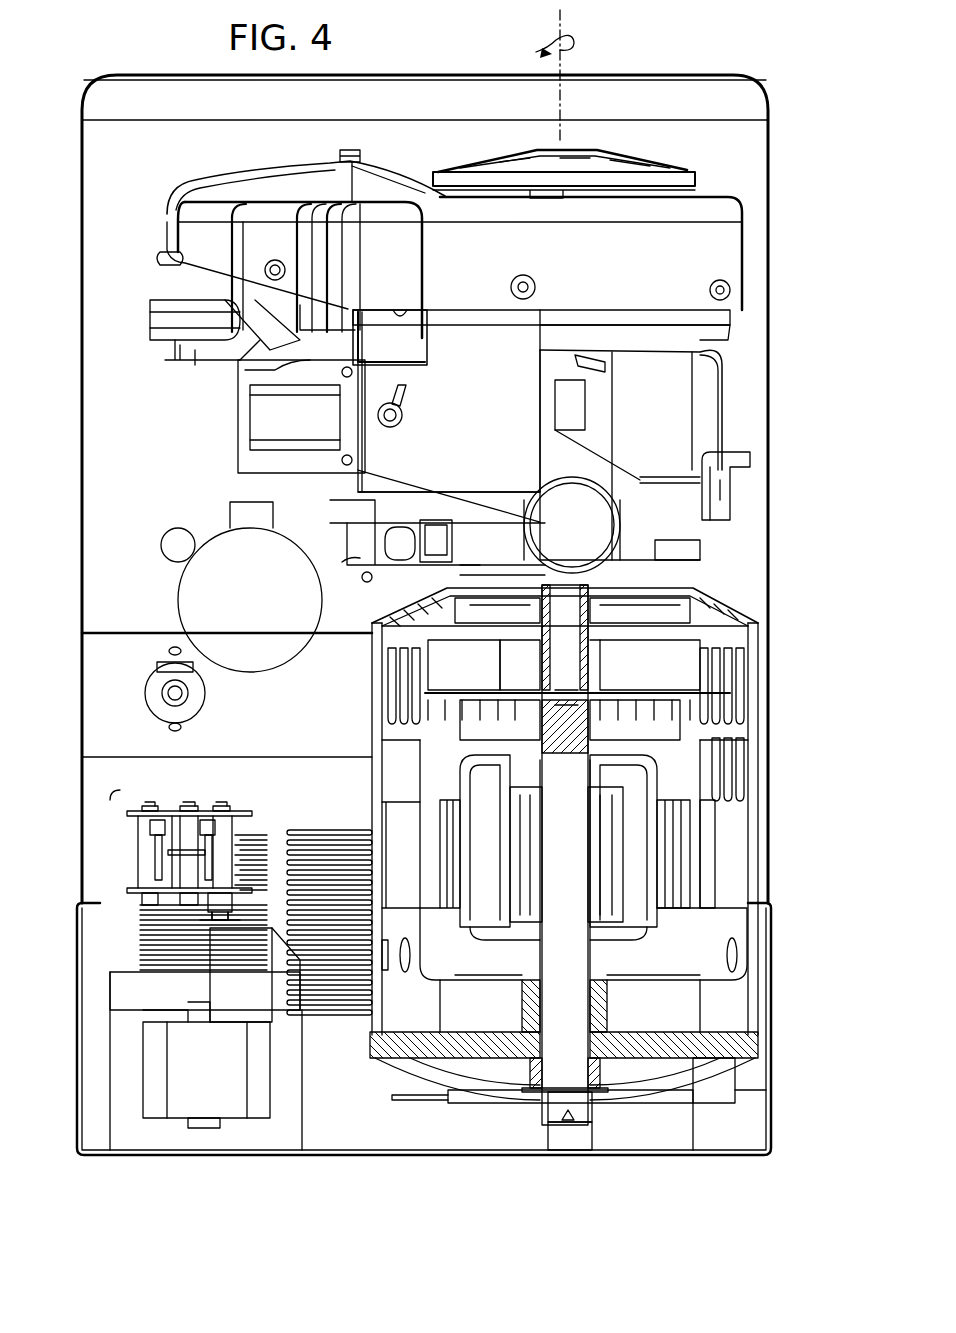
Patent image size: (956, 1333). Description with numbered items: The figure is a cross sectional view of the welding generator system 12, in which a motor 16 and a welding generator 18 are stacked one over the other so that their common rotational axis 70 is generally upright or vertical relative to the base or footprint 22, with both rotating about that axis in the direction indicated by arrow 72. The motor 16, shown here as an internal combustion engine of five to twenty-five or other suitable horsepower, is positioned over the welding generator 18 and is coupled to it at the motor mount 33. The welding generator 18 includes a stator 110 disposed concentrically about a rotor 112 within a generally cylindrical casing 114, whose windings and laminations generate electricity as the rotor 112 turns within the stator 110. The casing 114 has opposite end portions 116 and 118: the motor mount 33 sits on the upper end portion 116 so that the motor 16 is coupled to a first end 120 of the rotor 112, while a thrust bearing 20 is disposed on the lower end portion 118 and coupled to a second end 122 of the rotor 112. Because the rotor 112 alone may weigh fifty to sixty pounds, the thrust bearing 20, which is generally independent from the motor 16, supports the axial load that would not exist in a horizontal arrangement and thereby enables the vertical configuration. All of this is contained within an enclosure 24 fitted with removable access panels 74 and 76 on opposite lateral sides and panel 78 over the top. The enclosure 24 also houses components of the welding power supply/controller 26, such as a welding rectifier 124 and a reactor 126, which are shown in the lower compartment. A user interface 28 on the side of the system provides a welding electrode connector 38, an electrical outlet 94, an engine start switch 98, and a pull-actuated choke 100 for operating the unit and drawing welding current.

The welding generator system 12 is at (190, 44).
The motor 16 is at (742, 206).
The welding generator 18 is at (774, 710).
The thrust bearing 20 is at (587, 1083).
The base or footprint 22 is at (650, 1170).
The enclosure 24 is at (66, 946).
The welding power supply/controller 26 is at (98, 778).
The user interface 28 is at (95, 650).
The motor mount 33 is at (578, 606).
The welding electrode connector 38 is at (143, 693).
The rotational axis 70 is at (566, 40).
The arrow 72 is at (546, 52).
The panel 74 is at (770, 250).
The panel 76 is at (82, 262).
The panel 78 is at (708, 78).
The electrical outlet 94 is at (342, 562).
The engine start switch 98 is at (235, 503).
The pull-actuated choke 100 is at (170, 536).
The stator 110 is at (722, 845).
The rotor 112 is at (568, 958).
The casing 114 is at (758, 996).
The end portion 116 is at (735, 616).
The end portion 118 is at (676, 1073).
The first end of the rotor 120 is at (640, 562).
The second end of the rotor 122 is at (565, 1098).
The welding rectifier 124 is at (120, 908).
The reactor 126 is at (273, 995).